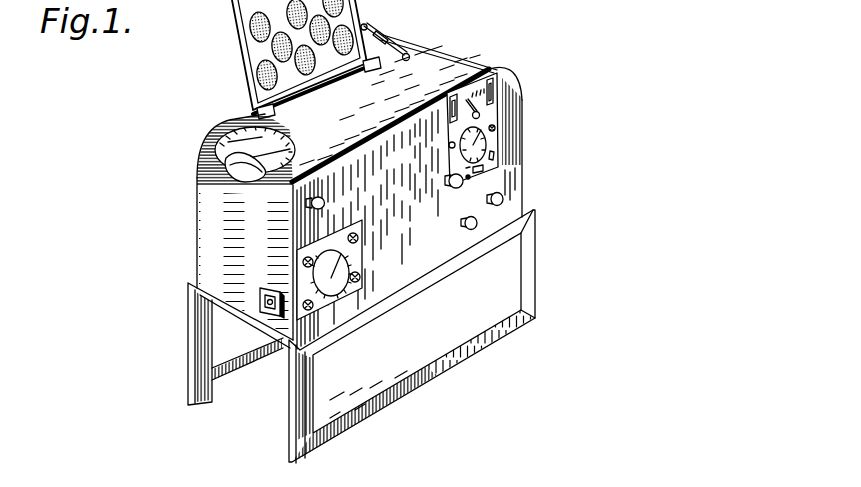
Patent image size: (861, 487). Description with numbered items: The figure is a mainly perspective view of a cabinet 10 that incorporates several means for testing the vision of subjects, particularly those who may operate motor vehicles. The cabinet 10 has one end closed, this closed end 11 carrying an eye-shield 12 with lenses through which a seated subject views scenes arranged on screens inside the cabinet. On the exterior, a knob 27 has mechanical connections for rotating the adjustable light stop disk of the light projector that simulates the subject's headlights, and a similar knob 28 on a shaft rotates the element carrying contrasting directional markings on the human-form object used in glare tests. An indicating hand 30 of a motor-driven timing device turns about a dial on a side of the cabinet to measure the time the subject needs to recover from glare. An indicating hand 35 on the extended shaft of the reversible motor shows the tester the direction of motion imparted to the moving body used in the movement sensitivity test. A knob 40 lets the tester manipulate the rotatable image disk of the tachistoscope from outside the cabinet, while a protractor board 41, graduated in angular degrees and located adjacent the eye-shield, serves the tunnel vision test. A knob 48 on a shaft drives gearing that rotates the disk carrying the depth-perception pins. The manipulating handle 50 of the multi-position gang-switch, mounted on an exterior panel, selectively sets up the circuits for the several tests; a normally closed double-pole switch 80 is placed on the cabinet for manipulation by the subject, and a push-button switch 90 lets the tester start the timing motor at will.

The cabinet 10 is at (521, 161).
The closed end 11 is at (199, 232).
The eye-shield 12 is at (198, 170).
The knob 27 is at (324, 200).
The knob 28 is at (476, 232).
The indicating hand 30 is at (345, 292).
The indicating hand 35 is at (486, 142).
The knob 40 is at (452, 188).
The protractor board 41 is at (234, 128).
The knob 48 is at (504, 199).
The manipulating handle 50 is at (480, 108).
The double-pole switch 80 is at (271, 312).
The push-button switch 90 is at (261, 298).